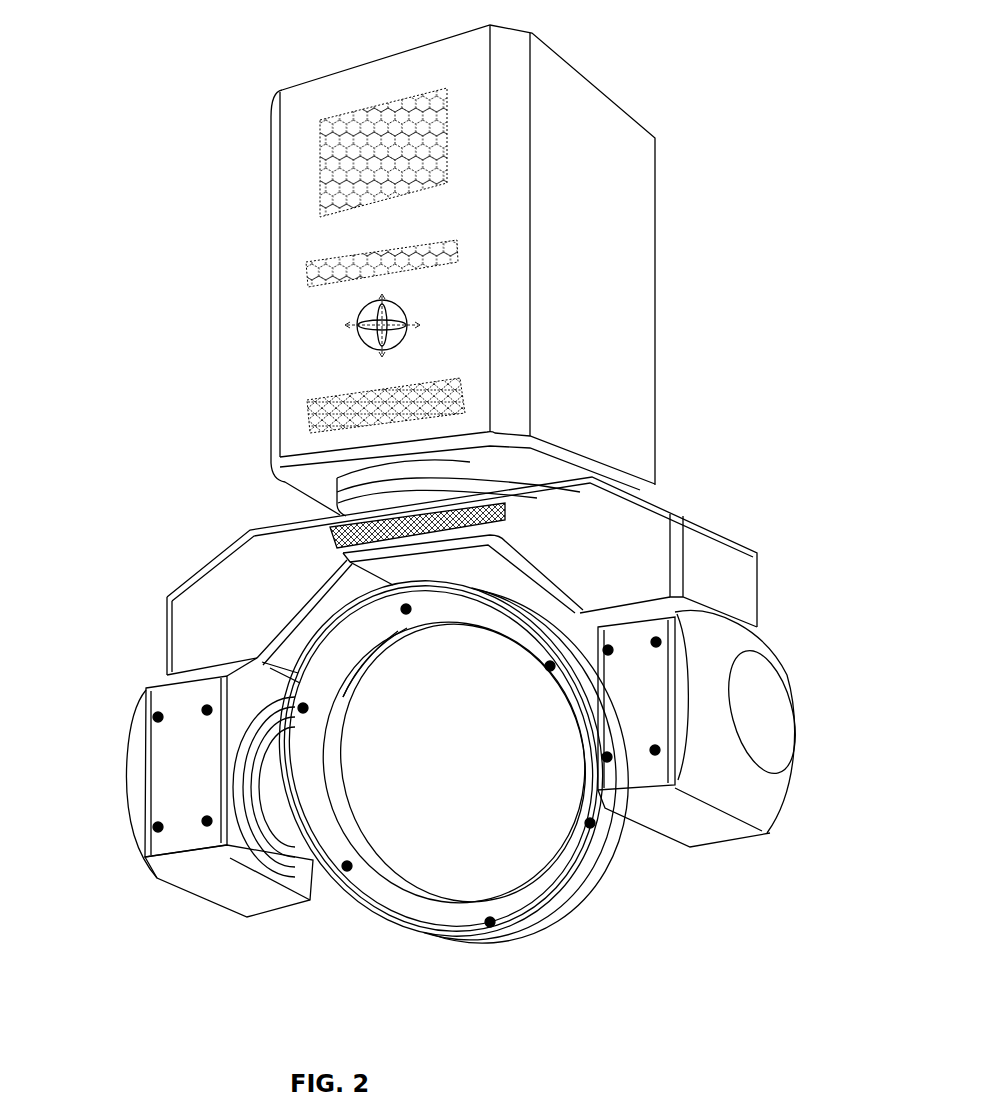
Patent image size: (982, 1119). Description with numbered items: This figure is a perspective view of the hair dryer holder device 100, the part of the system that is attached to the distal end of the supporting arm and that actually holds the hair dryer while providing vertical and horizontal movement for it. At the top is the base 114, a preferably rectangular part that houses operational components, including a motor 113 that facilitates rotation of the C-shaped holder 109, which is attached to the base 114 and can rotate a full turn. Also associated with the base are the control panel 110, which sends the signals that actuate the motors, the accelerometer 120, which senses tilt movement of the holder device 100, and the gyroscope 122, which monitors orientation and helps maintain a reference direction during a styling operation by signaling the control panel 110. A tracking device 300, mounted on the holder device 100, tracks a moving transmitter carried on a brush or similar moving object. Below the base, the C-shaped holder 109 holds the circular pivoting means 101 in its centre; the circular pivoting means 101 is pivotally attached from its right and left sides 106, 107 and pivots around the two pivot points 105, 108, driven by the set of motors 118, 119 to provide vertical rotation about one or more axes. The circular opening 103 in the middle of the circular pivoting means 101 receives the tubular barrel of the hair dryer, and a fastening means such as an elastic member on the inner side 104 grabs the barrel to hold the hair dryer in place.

The hair dryer holder device 100 is at (165, 70).
The base 114 is at (640, 168).
The control panel 110 is at (318, 195).
The accelerometer 120 is at (310, 277).
The gyroscope 122 is at (370, 333).
The motor 113 is at (313, 420).
The tracking device 300 is at (333, 526).
The C-shaped holder 109 is at (183, 610).
The motor 119 is at (135, 773).
The motor 118 is at (730, 777).
The pivot point 105 is at (327, 847).
The circular pivoting means 101 is at (523, 915).
The inner side 104 is at (398, 870).
The pivot point 108 is at (603, 880).
The left side 107 is at (575, 748).
The right side 106 is at (325, 773).
The circular opening 103 is at (494, 835).